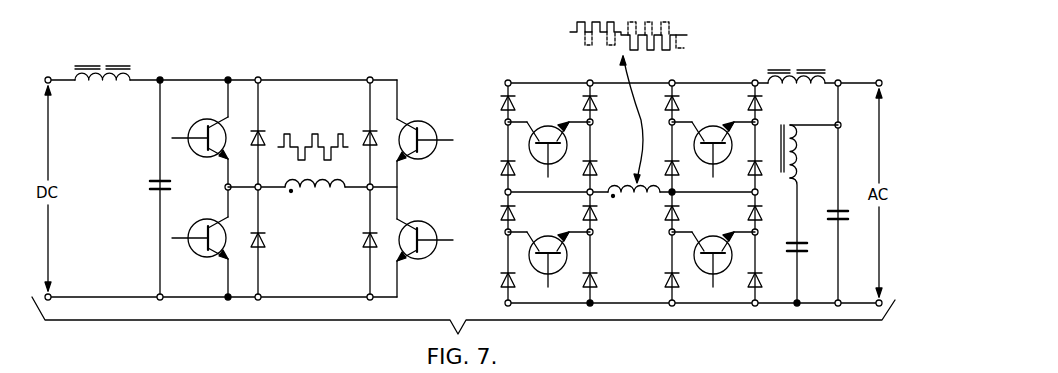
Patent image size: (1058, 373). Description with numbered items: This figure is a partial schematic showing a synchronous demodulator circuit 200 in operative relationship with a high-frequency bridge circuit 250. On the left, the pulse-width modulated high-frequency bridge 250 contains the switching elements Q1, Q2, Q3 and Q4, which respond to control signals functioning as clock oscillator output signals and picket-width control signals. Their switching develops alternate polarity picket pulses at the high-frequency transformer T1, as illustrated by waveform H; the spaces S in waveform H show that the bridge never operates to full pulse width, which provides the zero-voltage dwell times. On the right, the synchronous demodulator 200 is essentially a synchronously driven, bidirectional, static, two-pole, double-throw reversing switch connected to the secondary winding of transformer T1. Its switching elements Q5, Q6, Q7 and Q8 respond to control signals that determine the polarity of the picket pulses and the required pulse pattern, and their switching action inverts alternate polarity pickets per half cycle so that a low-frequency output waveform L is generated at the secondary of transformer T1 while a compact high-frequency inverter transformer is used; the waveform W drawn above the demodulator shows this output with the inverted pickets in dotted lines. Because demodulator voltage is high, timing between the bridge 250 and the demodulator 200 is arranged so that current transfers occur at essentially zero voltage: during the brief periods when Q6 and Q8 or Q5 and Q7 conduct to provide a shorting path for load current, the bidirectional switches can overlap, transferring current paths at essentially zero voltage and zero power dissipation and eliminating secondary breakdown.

The high-frequency bridge circuit 250 is at (222, 175).
The synchronous demodulator circuit 200 is at (695, 181).
The switching element Q1 is at (213, 117).
The switching element Q2 is at (204, 248).
The switching element Q3 is at (425, 120).
The switching element Q4 is at (423, 252).
The synchronous demodulator switching element Q5 is at (568, 122).
The synchronous demodulator switching element Q6 is at (733, 232).
The synchronous demodulator switching element Q7 is at (568, 232).
The synchronous demodulator switching element Q8 is at (733, 122).
The high-frequency transformer T1 is at (325, 189).
The spaces S is at (296, 141).
The waveform H is at (335, 120).
The output waveform W is at (619, 32).
The low-frequency output waveform L is at (679, 11).